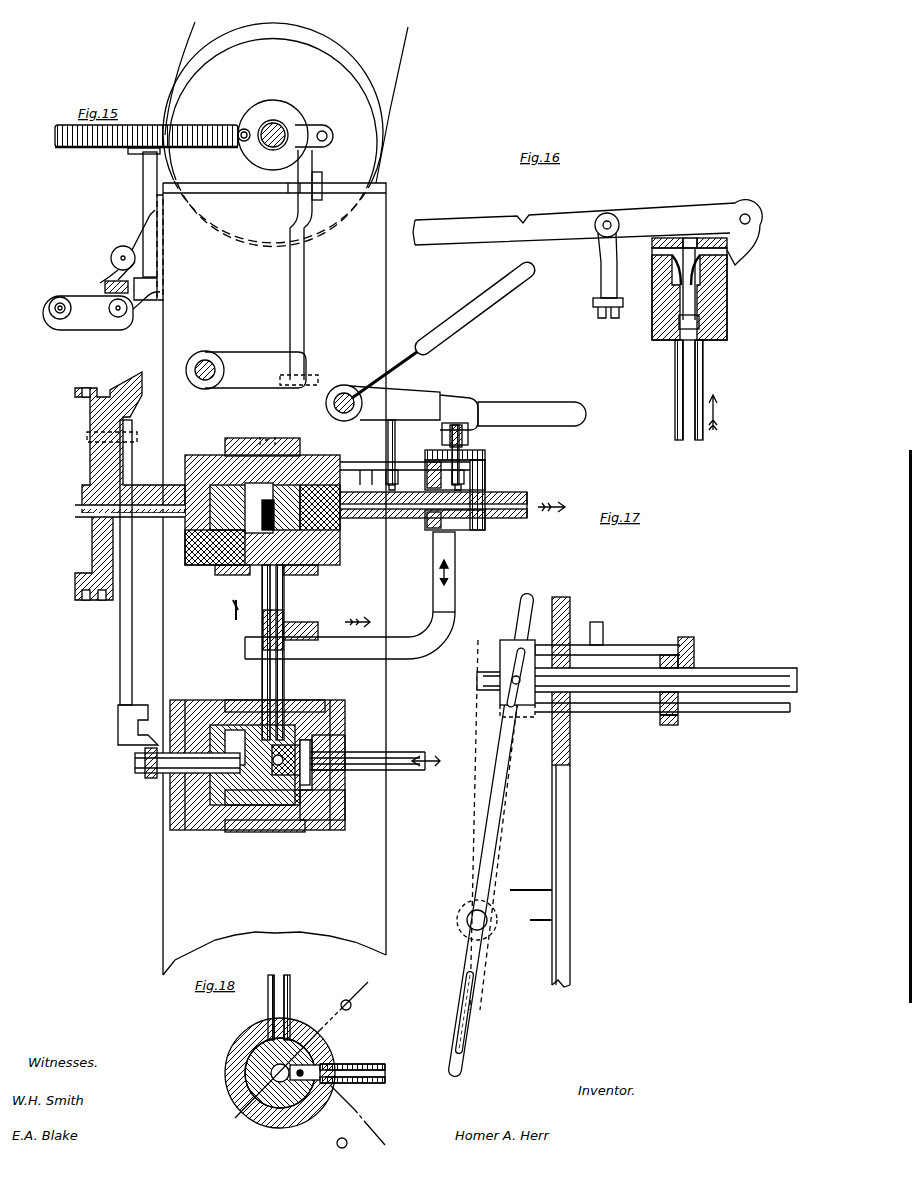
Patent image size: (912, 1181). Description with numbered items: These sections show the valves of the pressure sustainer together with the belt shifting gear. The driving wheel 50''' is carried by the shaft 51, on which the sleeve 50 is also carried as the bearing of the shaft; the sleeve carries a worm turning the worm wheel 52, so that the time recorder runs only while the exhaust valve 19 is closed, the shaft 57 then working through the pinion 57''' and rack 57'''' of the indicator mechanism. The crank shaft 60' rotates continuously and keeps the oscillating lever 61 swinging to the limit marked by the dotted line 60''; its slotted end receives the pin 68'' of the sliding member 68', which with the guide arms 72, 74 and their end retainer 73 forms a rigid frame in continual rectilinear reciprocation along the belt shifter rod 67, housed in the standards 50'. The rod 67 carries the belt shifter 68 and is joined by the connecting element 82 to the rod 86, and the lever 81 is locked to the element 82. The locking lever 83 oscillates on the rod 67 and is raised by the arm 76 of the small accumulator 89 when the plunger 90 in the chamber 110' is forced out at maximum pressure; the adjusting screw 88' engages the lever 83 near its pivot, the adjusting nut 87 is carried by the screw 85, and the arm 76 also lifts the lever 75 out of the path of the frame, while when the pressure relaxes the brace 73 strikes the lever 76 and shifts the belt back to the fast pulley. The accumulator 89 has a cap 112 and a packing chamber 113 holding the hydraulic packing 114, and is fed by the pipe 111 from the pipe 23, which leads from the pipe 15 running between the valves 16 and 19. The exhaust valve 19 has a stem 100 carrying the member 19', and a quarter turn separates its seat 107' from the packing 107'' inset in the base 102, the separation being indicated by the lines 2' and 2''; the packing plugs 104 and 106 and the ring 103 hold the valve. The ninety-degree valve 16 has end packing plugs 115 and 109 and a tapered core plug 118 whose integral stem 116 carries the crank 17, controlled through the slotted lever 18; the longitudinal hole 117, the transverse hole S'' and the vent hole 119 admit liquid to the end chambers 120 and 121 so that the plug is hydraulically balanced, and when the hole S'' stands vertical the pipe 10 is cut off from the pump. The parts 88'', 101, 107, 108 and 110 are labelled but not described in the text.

In FIG. 15, the sleeve 50 is at (278, 121).
In FIG. 15, the driving wheel 50''' is at (285, 134).
In FIG. 15, the shaft 51 is at (285, 128).
In FIG. 15, the worm wheel 52 is at (200, 125).
In FIG. 15, the shaft 57 is at (113, 212).
In FIG. 15, the pinion 57''' is at (179, 247).
In FIG. 15, the rack 57'''' is at (79, 278).
In FIG. 15, the shaft 60' is at (328, 136).
In FIG. 15, the lever 81 is at (304, 278).
In FIG. 15, the connecting element 82 is at (255, 352).
In FIG. 15, the rod 86 is at (208, 360).
In FIG. 15, the belt shifter shaft 67 is at (350, 395).
In FIG. 17, the belt shifter shaft 67 is at (705, 668).
In FIG. 15, the belt shifter 68 is at (475, 308).
In FIG. 15, the adjusting screw 88' is at (412, 427).
In FIG. 15, the rod 88'' is at (460, 429).
In FIG. 15, the locking lever 83 is at (470, 396).
In FIG. 15, the arm 76 is at (508, 393).
In FIG. 16, the arm 76 is at (575, 218).
In FIG. 15, the screw 85 is at (462, 440).
In FIG. 16, the screw 85 is at (601, 278).
In FIG. 15, the adjusting nut 87 is at (464, 480).
In FIG. 16, the adjusting nut 87 is at (604, 312).
In FIG. 15, the cap 112 is at (470, 455).
In FIG. 16, the cap 112 is at (700, 240).
In FIG. 15, the small accumulator 89 is at (485, 468).
In FIG. 16, the small accumulator 89 is at (727, 300).
In FIG. 15, the packing plug 106 is at (380, 470).
In FIG. 15, the hydraulic packing 114 is at (505, 492).
In FIG. 16, the hydraulic packing 114 is at (660, 240).
In FIG. 15, the pipe 111 is at (455, 552).
In FIG. 16, the pipe 111 is at (703, 370).
In FIG. 15, the pipe 23 is at (432, 640).
In FIG. 15, the valve body 101 is at (330, 520).
In FIG. 15, the ring 103 is at (250, 438).
In FIG. 15, the line 2' is at (260, 433).
In FIG. 15, the line 2'' is at (293, 427).
In FIG. 15, the packing plug 104 is at (200, 530).
In FIG. 15, the exhaust valve 19 is at (214, 582).
In FIG. 15, the valve 107 is at (206, 603).
In FIG. 15, the valve seat 107' is at (233, 597).
In FIG. 15, the packing 107'' is at (297, 607).
In FIG. 15, the base 102 is at (320, 565).
In FIG. 15, the stem 100 is at (82, 520).
In FIG. 15, the member 19' is at (72, 617).
In FIG. 15, the slotted lever 18 is at (120, 645).
In FIG. 15, the crank 17 is at (138, 730).
In FIG. 15, the end packing plug 109 is at (185, 800).
In FIG. 15, the stem 116 is at (145, 773).
In FIG. 15, the pipe 10 is at (300, 800).
In FIG. 18, the pipe 10 is at (370, 1064).
In FIG. 15, the vent hole 119 is at (260, 740).
In FIG. 18, the vent hole 119 is at (310, 1085).
In FIG. 15, the cap 108 is at (295, 705).
In FIG. 15, the transverse hole S'' is at (293, 721).
In FIG. 18, the transverse hole S'' is at (345, 1051).
In FIG. 15, the longitudinal hole 117 is at (317, 692).
In FIG. 18, the longitudinal hole 117 is at (250, 1075).
In FIG. 15, the end packing plug 115 is at (345, 740).
In FIG. 15, the liquid chamber 121 is at (310, 780).
In FIG. 15, the ninety-degree valve 16 is at (330, 820).
In FIG. 15, the tapered core plug 118 is at (235, 805).
In FIG. 15, the plate 110 is at (265, 846).
In FIG. 15, the liquid chamber 120 is at (194, 851).
In FIG. 15, the pipe 15 is at (262, 650).
In FIG. 18, the pipe 15 is at (268, 1000).
In FIG. 16, the packing chamber 113 is at (695, 278).
In FIG. 16, the plunger 90 is at (684, 300).
In FIG. 16, the chamber 110' is at (651, 347).
In FIG. 17, the standard 50' is at (557, 792).
In FIG. 17, the guide arm 72 is at (620, 645).
In FIG. 17, the lever 75 is at (596, 622).
In FIG. 17, the guide arm 74 is at (620, 712).
In FIG. 17, the end retainer 73 is at (668, 725).
In FIG. 17, the sliding member 68' is at (512, 660).
In FIG. 17, the pin 68'' is at (485, 734).
In FIG. 17, the oscillating lever 61 is at (470, 870).
In FIG. 17, the dotted line 60'' is at (490, 1006).